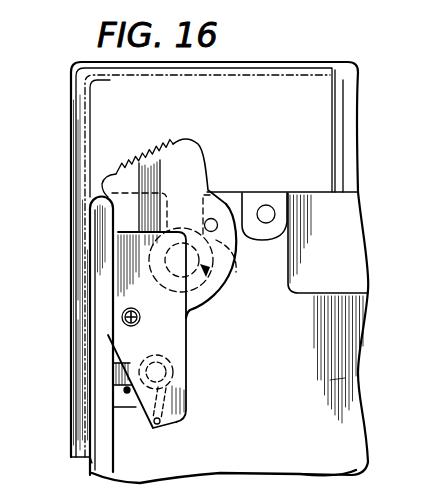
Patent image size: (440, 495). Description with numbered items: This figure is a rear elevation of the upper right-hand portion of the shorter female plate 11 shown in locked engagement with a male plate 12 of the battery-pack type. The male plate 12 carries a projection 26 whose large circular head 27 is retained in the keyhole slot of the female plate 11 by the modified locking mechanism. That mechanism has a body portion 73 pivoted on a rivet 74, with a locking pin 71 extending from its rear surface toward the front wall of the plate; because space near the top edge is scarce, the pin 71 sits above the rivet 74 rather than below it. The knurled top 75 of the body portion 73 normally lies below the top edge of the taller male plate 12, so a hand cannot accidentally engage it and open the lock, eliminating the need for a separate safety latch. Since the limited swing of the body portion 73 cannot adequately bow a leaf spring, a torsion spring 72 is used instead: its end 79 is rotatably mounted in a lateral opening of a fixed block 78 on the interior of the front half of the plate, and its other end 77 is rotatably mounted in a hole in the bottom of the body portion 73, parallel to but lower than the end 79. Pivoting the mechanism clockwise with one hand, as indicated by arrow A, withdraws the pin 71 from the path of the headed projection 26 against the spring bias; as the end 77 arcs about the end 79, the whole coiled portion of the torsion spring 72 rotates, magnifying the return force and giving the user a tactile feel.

The male plate 12 is at (262, 77).
The female plate 11 is at (336, 377).
The knurled top 75 is at (145, 160).
The locking pin 71 is at (213, 218).
The large circular head 27 is at (235, 255).
The projection 26 is at (225, 295).
The arrow A is at (215, 308).
The rivet 74 is at (122, 314).
The body portion 73 is at (170, 334).
The torsion spring 72 is at (173, 374).
The spring end 77 is at (160, 423).
The fixed block 78 is at (128, 404).
The spring end 79 is at (124, 390).